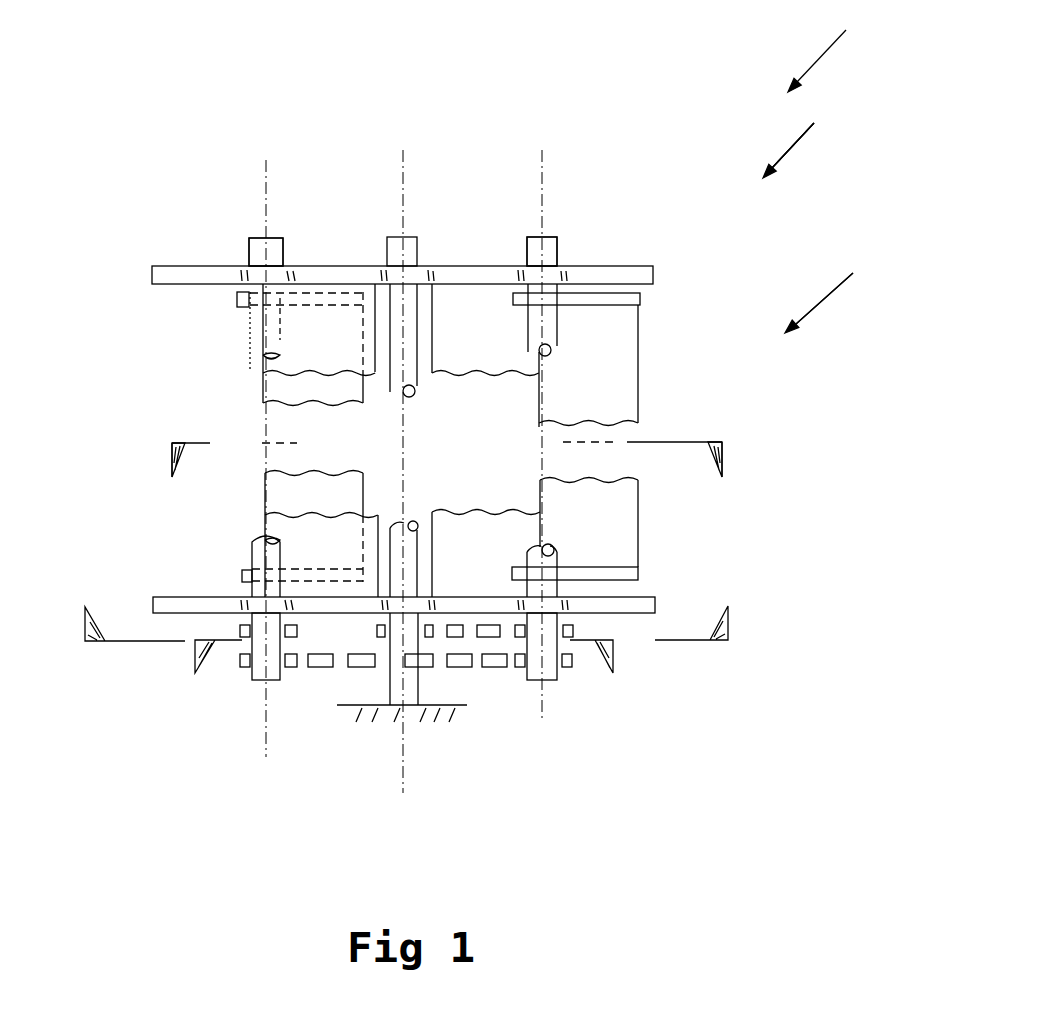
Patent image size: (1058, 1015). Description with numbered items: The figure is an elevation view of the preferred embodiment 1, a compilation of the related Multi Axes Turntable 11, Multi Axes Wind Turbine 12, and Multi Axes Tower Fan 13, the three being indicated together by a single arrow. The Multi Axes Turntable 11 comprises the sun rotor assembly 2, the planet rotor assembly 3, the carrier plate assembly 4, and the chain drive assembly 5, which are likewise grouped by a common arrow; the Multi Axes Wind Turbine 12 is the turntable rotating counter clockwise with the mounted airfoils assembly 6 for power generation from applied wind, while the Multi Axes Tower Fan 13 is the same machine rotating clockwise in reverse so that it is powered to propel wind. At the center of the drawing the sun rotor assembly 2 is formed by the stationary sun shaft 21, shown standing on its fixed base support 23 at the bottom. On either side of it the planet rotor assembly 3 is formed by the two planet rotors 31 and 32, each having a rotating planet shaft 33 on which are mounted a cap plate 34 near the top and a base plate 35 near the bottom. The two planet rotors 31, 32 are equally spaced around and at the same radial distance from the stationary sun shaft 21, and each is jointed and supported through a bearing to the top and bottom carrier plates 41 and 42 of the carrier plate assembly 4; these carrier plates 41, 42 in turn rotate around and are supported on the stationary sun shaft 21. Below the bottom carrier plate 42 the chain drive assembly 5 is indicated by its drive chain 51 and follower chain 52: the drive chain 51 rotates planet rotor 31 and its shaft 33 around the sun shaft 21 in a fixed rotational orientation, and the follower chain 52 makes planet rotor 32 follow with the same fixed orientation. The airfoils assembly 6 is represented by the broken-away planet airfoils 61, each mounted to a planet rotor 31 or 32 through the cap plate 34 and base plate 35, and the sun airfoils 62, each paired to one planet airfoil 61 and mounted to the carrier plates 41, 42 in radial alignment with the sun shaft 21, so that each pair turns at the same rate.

The preferred embodiment 1 is at (834, 57).
The Multi Axes Turntable 11 is at (814, 146).
The Multi Axes Wind Turbine 12 is at (818, 149).
The Multi Axes Tower Fan 13 is at (818, 166).
The sun rotor assembly 2 is at (836, 301).
The planet rotor assembly 3 is at (841, 300).
The carrier plate assembly 4 is at (535, 529).
The chain drive assembly 5 is at (465, 504).
The airfoils assembly 6 is at (510, 454).
The stationary sun shaft 21 is at (413, 236).
The fixed base support 23 is at (375, 707).
The planet rotor 31 is at (552, 236).
The planet rotor 32 is at (267, 238).
The rotating planet shaft 33 is at (407, 207).
The cap plate 34 is at (683, 367).
The base plate 35 is at (658, 517).
The top carrier plate 41 is at (622, 264).
The bottom carrier plate 42 is at (622, 613).
The drive chain 51 is at (472, 662).
The follower chain 52 is at (320, 665).
The planet airfoil 61 is at (560, 477).
The sun airfoil 62 is at (373, 372).